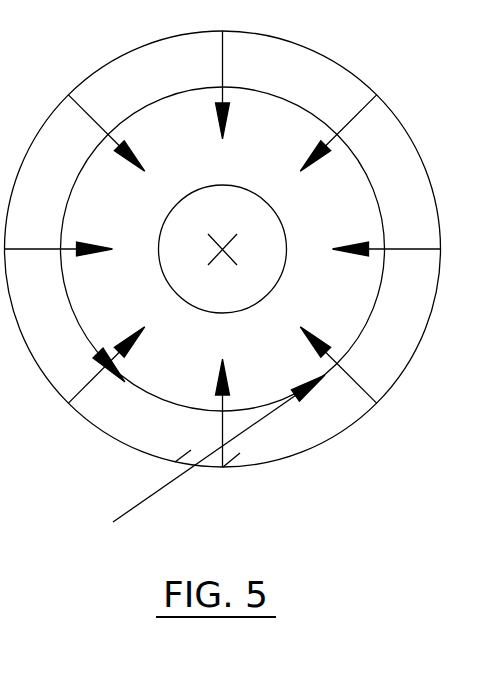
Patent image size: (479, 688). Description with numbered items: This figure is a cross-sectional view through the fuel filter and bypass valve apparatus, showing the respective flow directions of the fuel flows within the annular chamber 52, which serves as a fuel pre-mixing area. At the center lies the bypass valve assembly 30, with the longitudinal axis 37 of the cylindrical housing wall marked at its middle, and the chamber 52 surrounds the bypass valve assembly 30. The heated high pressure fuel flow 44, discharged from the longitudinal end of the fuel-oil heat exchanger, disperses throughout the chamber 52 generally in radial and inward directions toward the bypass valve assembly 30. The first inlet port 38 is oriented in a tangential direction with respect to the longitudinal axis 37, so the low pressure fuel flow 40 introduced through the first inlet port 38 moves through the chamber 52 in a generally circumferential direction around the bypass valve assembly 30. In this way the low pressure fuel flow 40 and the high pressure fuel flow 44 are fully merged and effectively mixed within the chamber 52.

The bypass valve assembly 30 is at (165, 221).
The longitudinal axis 37 is at (228, 247).
The first inlet port 38 is at (203, 469).
The low pressure fuel flow 40 is at (143, 501).
The high pressure fuel flow 44 is at (225, 93).
The chamber 52 is at (328, 310).